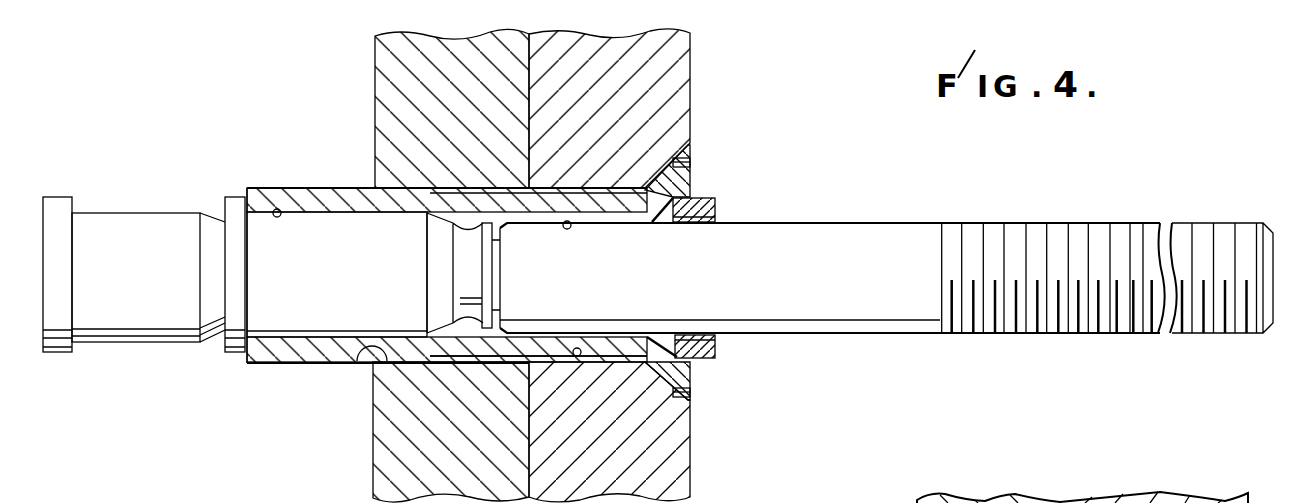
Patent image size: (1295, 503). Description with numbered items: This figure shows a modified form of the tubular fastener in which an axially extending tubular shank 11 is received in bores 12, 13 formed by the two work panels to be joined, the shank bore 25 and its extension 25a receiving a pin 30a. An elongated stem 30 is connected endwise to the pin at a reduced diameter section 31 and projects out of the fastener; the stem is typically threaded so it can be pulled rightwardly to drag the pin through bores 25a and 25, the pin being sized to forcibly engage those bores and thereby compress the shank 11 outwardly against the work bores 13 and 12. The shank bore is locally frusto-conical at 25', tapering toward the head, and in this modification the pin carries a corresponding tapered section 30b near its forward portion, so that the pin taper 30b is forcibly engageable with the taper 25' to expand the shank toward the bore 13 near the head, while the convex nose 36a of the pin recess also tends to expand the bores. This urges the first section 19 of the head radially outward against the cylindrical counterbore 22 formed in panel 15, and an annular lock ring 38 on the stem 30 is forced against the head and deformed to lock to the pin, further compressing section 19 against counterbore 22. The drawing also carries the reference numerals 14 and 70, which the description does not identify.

The tubular shank 11 is at (328, 197).
The bore 12 is at (577, 356).
The bore 13 is at (363, 352).
The upper wall section 14 is at (393, 68).
The panel or skin 15 is at (678, 55).
The first section 19 is at (692, 147).
The cylindrical counterbore 22 is at (677, 391).
The bore of the tubular shank 25 is at (578, 176).
The tubular shank bore 25a is at (277, 208).
The frusto-conical surface 25' is at (641, 248).
The elongated stem 30 is at (1102, 217).
The pin 30a is at (235, 274).
The tapered section 30b is at (440, 297).
The reduced diameter section 31 is at (497, 283).
The forward wall of the recess 36a is at (450, 334).
The annular lock ring 38 is at (713, 207).
The flange 70 is at (410, 187).